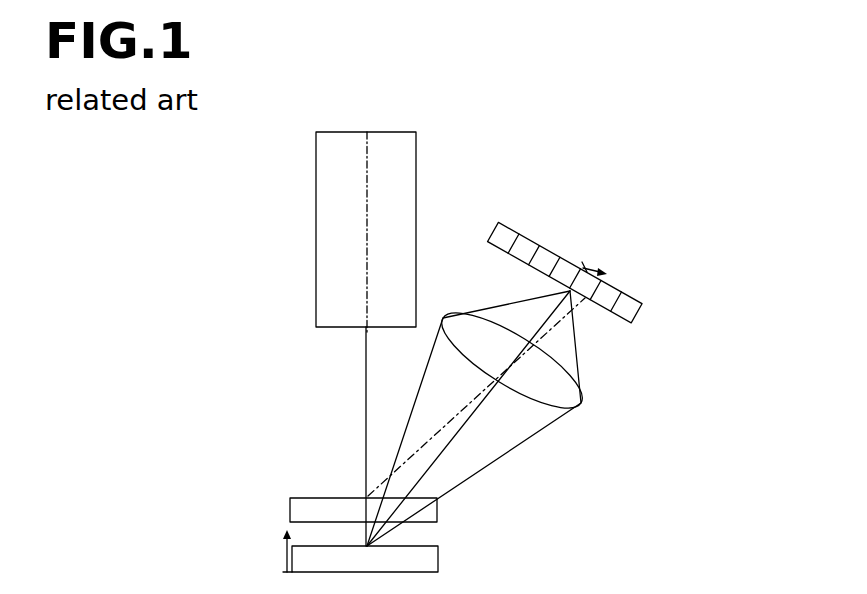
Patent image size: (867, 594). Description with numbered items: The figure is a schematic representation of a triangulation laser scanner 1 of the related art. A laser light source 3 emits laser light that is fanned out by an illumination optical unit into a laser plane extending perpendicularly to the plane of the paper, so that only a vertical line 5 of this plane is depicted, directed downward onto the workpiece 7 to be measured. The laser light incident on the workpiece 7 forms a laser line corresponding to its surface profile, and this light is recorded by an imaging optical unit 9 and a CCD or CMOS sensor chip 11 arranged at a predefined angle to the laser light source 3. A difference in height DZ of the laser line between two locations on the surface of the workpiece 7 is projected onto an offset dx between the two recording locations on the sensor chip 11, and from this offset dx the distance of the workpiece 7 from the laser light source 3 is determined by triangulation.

The triangulation laser scanner 1 is at (641, 130).
The laser light source 3 is at (390, 132).
The vertical line 5 is at (363, 402).
The workpiece 7 is at (438, 560).
The imaging optical unit 9 is at (583, 407).
The sensor chip 11 is at (640, 303).
The offset dx is at (592, 261).
The difference in height DZ is at (283, 552).